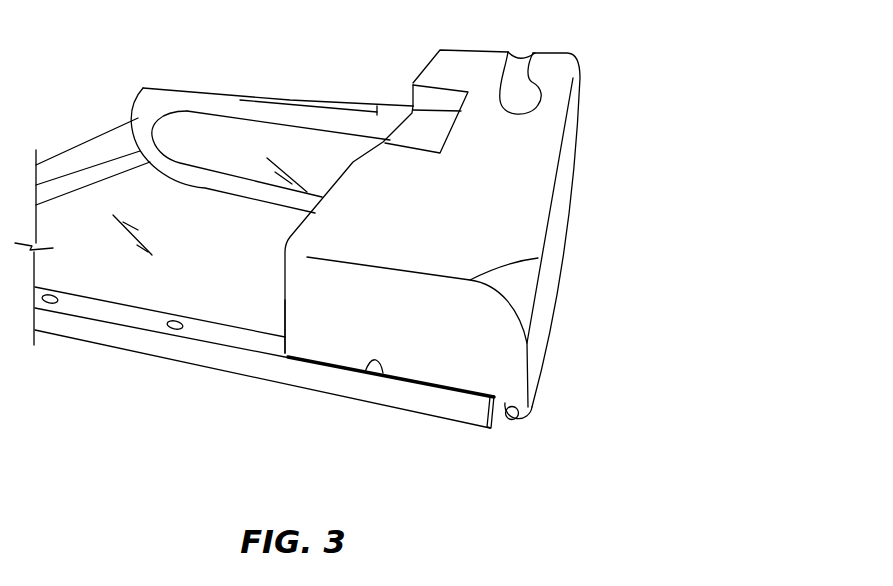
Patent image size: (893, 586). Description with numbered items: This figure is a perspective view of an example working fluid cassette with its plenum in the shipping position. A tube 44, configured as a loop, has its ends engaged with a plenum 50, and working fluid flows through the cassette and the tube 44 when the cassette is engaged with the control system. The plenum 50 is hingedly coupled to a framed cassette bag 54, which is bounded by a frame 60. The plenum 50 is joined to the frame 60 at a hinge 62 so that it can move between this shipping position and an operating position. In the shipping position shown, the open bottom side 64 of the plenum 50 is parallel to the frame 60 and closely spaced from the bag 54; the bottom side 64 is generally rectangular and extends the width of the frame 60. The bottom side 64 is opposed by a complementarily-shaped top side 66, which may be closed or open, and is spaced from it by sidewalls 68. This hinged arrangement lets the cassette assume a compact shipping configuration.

The tube 44 is at (308, 117).
The plenum 50 is at (438, 217).
The framed cassette bag 54 is at (194, 284).
The frame 60 is at (182, 352).
The hinge 62 is at (513, 423).
The open bottom side 64 is at (367, 373).
The top side 66 is at (490, 62).
The sidewalls 68 is at (330, 318).